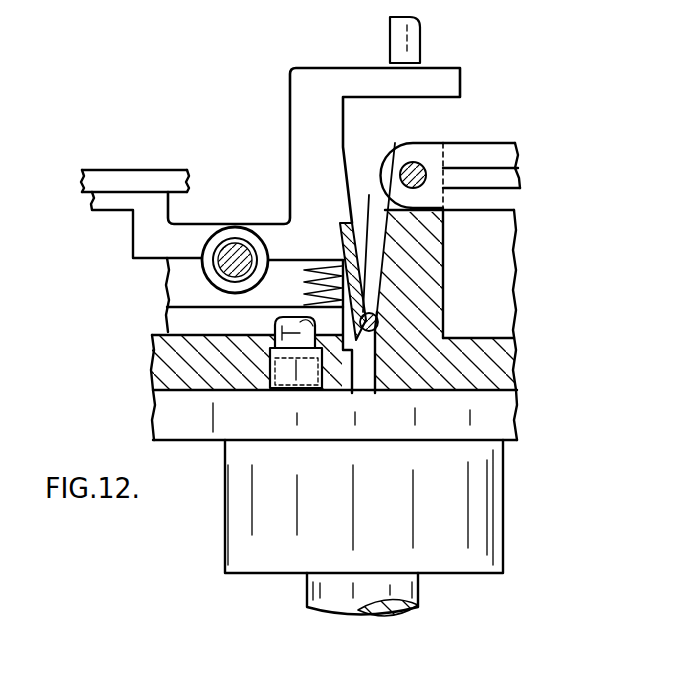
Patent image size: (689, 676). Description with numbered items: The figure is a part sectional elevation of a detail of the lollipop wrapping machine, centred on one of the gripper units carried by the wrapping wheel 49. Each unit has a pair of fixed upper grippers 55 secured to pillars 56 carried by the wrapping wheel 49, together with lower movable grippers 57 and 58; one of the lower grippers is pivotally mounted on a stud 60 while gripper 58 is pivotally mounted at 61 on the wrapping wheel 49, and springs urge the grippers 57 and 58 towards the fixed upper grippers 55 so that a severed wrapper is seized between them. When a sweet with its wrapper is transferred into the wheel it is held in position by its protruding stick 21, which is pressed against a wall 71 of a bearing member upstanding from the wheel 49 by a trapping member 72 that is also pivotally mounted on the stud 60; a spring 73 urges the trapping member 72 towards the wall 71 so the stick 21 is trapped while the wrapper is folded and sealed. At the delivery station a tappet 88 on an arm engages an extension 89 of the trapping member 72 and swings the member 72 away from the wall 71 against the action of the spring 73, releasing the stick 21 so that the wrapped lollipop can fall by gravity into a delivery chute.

The stick 21 is at (377, 327).
The wrapping wheel 49 is at (485, 382).
The upper grippers 55 is at (123, 182).
The pillars 56 is at (278, 326).
The lower movable gripper 57 is at (112, 200).
The lower movable gripper 58 is at (495, 198).
The stud 60 is at (232, 262).
The pivot 61 is at (420, 172).
The wall 71 is at (380, 302).
The trapping member 72 is at (360, 235).
The spring 73 is at (304, 285).
The tappet 88 is at (420, 35).
The extension 89 is at (367, 80).